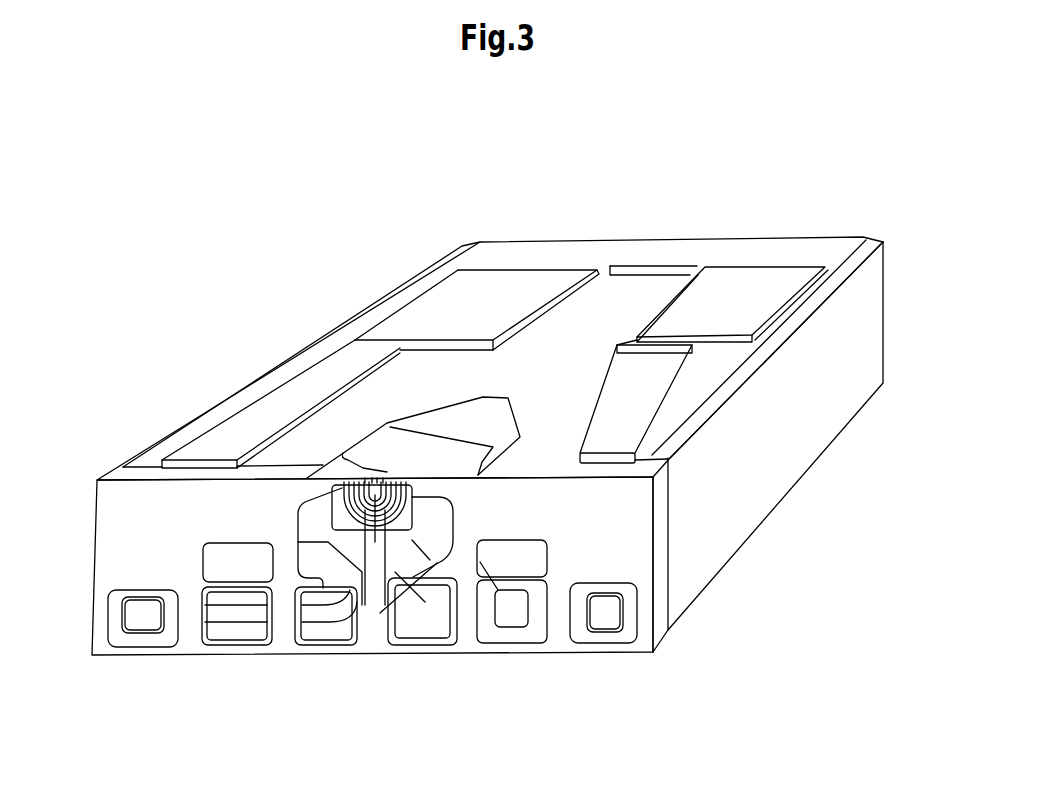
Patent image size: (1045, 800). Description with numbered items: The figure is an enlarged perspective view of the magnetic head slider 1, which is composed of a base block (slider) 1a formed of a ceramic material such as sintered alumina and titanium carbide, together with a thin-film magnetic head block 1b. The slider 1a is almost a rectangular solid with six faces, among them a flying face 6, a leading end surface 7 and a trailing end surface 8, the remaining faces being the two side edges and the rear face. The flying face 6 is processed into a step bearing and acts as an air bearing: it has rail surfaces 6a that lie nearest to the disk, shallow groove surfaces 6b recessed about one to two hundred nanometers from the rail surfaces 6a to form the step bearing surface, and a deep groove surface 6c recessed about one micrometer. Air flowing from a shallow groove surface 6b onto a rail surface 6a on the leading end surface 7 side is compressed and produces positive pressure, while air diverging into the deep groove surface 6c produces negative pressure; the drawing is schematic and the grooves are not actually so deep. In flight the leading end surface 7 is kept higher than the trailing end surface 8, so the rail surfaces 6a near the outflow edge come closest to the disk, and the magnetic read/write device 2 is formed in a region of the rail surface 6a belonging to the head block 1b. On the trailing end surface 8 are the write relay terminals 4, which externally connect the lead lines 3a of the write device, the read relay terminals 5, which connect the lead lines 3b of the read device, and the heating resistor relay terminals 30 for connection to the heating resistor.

The magnetic head slider 1 is at (170, 381).
The base block (slider) 1a is at (813, 437).
The thin-film magnetic head block 1b is at (665, 592).
The magnetic read/write device 2 is at (367, 472).
The lead lines 3a is at (462, 563).
The lead lines 3b is at (282, 628).
The write relay terminals 4 is at (500, 645).
The read relay terminals 5 is at (298, 645).
The flying face 6 is at (332, 229).
The rail surfaces 6a is at (367, 460).
The shallow groove surfaces 6b is at (370, 437).
The deep groove surface 6c is at (397, 393).
The leading end surface 7 is at (735, 237).
The trailing end surface 8 is at (622, 530).
The heating resistor relay terminals 30 is at (143, 640).